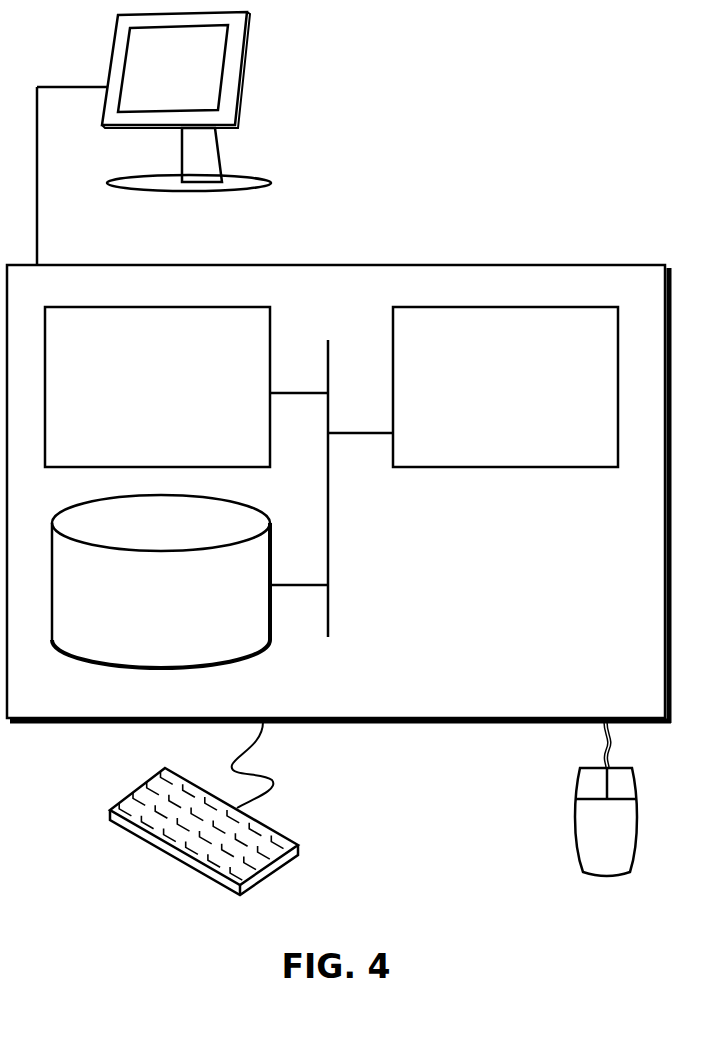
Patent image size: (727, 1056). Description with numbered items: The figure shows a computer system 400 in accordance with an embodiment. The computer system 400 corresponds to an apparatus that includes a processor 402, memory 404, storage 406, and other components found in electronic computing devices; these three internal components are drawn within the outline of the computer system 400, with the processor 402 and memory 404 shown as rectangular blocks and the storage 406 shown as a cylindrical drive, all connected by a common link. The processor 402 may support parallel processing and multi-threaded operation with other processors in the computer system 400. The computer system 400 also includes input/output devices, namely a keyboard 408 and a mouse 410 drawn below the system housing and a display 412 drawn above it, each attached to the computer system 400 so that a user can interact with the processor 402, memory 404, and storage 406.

The computer system 400 is at (382, 243).
The processor 402 is at (487, 400).
The memory 404 is at (137, 398).
The storage 406 is at (144, 608).
The keyboard 408 is at (127, 833).
The mouse 410 is at (586, 842).
The display 412 is at (186, 116).